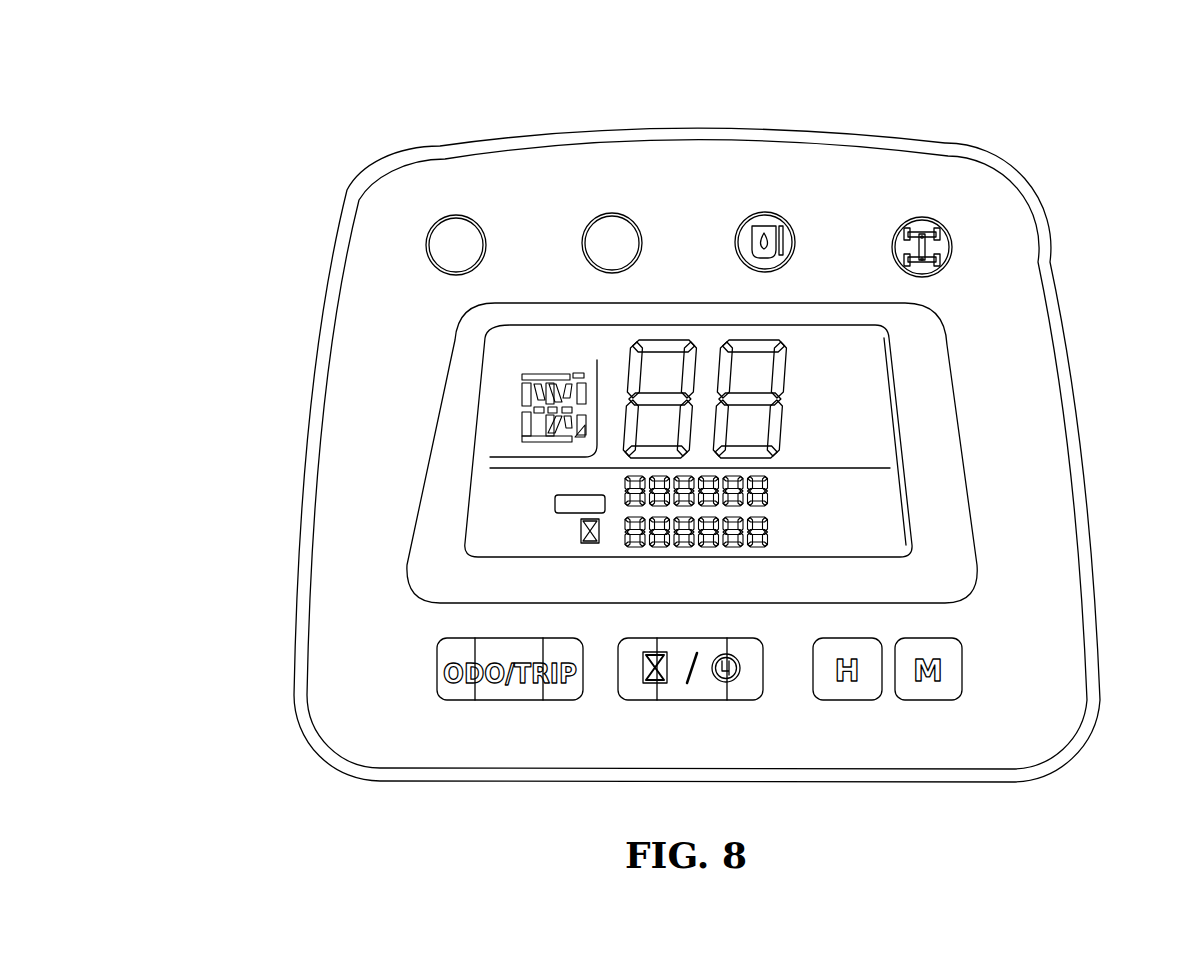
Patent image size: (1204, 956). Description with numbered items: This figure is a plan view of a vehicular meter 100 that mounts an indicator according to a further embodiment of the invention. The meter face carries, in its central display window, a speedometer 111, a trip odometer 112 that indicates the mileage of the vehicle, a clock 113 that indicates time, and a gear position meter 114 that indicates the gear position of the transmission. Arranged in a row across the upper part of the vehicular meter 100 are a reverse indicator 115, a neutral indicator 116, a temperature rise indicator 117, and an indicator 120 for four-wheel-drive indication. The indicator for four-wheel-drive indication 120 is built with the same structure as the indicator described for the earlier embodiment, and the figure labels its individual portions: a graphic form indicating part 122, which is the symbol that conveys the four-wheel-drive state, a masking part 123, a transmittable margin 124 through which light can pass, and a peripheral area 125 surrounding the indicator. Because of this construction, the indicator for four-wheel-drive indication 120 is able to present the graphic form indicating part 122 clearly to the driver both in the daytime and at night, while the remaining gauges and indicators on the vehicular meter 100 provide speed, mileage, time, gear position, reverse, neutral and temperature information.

The vehicular meter 100 is at (318, 178).
The speedometer 111 is at (808, 372).
The trip odometer 112 is at (848, 496).
The clock 113 is at (823, 534).
The gear position meter 114 is at (508, 409).
The reverse indicator 115 is at (456, 214).
The neutral indicator 116 is at (611, 212).
The temperature rise indicator 117 is at (766, 211).
The indicator for four-wheel-drive indication 120 is at (1022, 174).
The graphic form indicating part 122 is at (948, 258).
The masking part 123 is at (940, 246).
The transmittable margin 124 is at (950, 228).
The peripheral area 125 is at (947, 208).